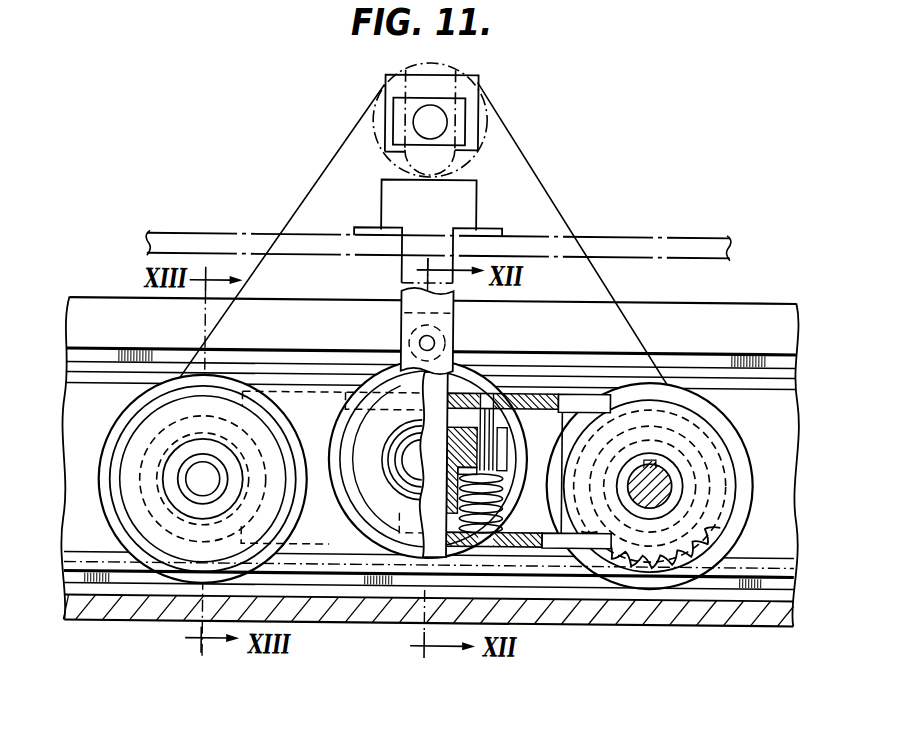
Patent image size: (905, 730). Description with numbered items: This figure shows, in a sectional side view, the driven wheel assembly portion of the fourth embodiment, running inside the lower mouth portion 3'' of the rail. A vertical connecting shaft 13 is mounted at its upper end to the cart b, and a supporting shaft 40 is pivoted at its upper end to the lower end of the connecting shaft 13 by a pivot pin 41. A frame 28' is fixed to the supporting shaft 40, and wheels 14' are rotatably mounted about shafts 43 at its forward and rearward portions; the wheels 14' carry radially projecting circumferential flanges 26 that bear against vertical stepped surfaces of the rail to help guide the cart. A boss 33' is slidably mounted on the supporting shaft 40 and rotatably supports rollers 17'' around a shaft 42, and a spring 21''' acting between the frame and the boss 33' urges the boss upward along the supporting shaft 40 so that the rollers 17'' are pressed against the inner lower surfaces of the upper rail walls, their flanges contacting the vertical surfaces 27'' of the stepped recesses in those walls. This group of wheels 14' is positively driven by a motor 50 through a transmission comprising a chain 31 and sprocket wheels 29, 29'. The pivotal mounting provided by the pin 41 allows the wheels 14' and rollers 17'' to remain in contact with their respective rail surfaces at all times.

The mouth portion of the rail 3'' is at (430, 436).
The vertical connecting shaft 13 is at (398, 264).
The wheels 14' is at (421, 481).
The rollers 17'' is at (332, 431).
The spring 21''' is at (440, 500).
The circumferential flanges 26 is at (117, 426).
The vertical surfaces 27'' is at (400, 363).
The frame 28' is at (485, 530).
The sprocket wheel 29 is at (193, 528).
The sprocket wheel 29' is at (669, 602).
The chain 31 is at (339, 143).
The boss 33' is at (520, 432).
The supporting shaft 40 is at (443, 421).
The pivot pin 41 is at (420, 343).
The shaft 42 is at (408, 463).
The shafts 43 is at (222, 485).
The motor 50 is at (479, 152).
The cart b is at (651, 230).